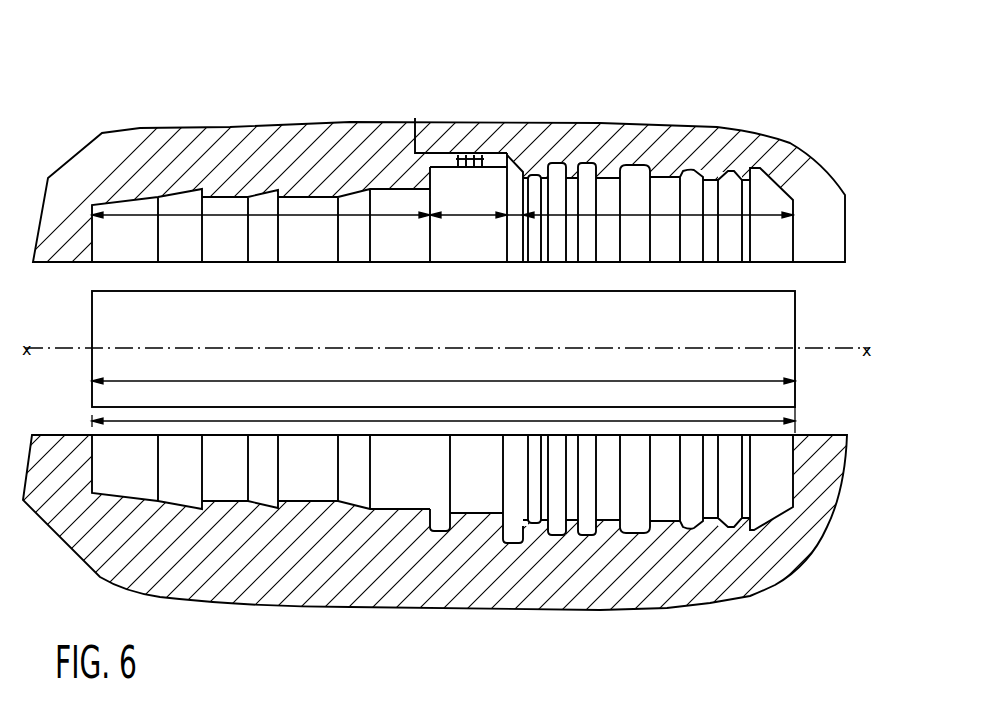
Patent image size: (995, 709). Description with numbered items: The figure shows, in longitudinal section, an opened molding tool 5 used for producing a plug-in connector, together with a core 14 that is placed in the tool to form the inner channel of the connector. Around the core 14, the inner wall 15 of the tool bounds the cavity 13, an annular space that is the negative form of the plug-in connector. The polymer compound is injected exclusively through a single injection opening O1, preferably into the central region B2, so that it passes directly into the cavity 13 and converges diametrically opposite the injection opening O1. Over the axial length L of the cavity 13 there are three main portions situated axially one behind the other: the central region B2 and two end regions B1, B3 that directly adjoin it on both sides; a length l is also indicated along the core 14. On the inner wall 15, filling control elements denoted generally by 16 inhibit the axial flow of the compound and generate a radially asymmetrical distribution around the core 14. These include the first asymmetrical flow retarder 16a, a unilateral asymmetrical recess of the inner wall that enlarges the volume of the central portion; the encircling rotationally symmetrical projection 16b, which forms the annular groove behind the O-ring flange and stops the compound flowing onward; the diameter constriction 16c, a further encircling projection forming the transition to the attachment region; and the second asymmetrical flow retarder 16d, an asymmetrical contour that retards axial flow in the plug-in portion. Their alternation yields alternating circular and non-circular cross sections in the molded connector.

The molding tool 5 is at (668, 112).
The cavity 13 is at (695, 252).
The core 14 is at (783, 308).
The inner wall 15 is at (380, 197).
The filling control element 16 is at (501, 338).
The first asymmetrical flow retarder 16a is at (455, 153).
The projection 16b is at (500, 152).
The diameter constriction 16c is at (415, 118).
The second asymmetrical flow retarder 16d is at (571, 365).
The injection opening O1 is at (473, 153).
The end region B1 is at (737, 217).
The central region B2 is at (467, 217).
The end region B3 is at (217, 217).
The axial length L is at (770, 421).
The length l is at (703, 378).